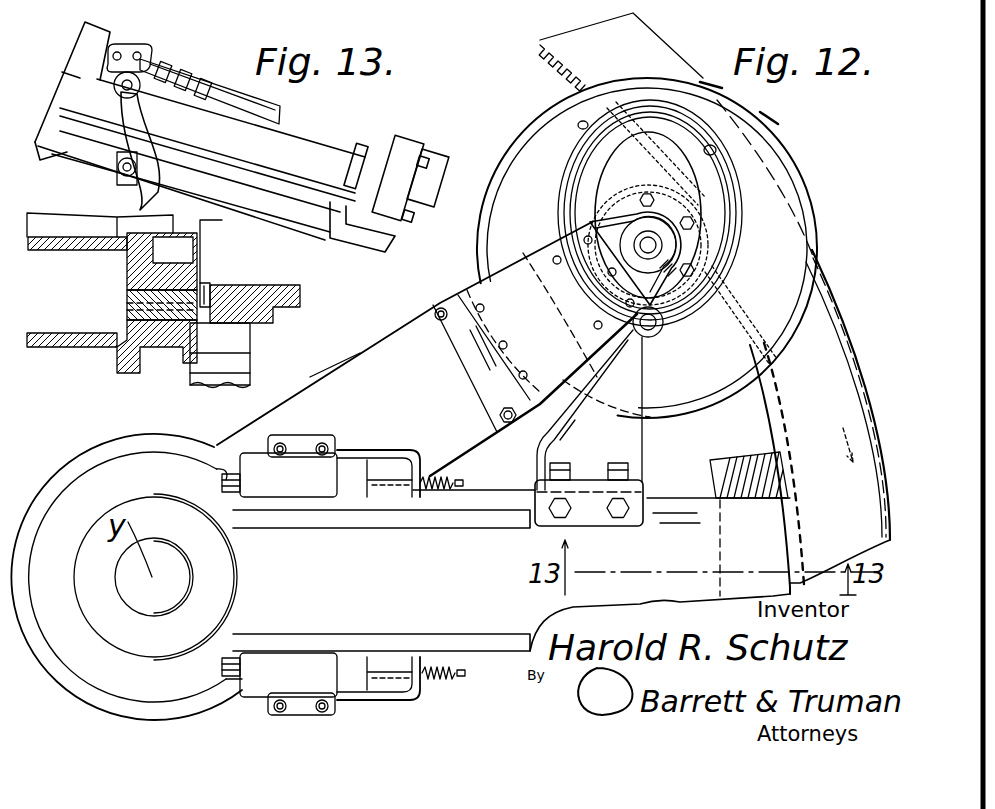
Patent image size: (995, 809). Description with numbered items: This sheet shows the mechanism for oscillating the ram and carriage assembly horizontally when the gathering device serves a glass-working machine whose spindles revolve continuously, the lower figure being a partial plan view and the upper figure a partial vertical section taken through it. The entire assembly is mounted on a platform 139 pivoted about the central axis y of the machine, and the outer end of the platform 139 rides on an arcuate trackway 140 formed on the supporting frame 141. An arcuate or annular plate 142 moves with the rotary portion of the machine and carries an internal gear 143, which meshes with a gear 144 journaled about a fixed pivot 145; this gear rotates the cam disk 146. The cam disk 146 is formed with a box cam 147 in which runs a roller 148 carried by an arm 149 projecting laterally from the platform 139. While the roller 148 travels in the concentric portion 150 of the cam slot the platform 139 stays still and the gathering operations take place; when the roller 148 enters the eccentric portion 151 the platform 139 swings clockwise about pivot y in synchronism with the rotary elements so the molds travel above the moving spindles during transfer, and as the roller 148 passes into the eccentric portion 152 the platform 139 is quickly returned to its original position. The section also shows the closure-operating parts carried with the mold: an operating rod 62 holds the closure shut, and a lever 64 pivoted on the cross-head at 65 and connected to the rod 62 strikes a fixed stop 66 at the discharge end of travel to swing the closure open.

In FIG. 13, the operating rod 62 is at (168, 64).
In FIG. 13, the pivot on the cross-head 65 is at (137, 67).
In FIG. 13, the lever 64 is at (150, 178).
In FIG. 13, the fixed stop 66 is at (122, 176).
In FIG. 13, the platform 139 is at (64, 252).
In FIG. 12, the platform 139 is at (688, 490).
In FIG. 13, the arcuate trackway 140 is at (127, 317).
In FIG. 12, the arcuate trackway 140 is at (712, 461).
In FIG. 13, the supporting frame 141 is at (92, 345).
In FIG. 12, the supporting frame 141 is at (790, 400).
In FIG. 13, the arcuate or annular plate 142 is at (283, 280).
In FIG. 12, the arcuate or annular plate 142 is at (827, 303).
In FIG. 13, the internal gear 143 is at (206, 286).
In FIG. 12, the internal gear 143 is at (585, 68).
In FIG. 12, the gear 144 is at (648, 203).
In FIG. 12, the fixed pivot 145 is at (640, 250).
In FIG. 12, the cam disk 146 is at (803, 190).
In FIG. 12, the box cam 147 is at (562, 163).
In FIG. 12, the roller 148 is at (728, 326).
In FIG. 12, the arm 149 is at (632, 452).
In FIG. 12, the concentric portion of the cam slot 150 is at (720, 330).
In FIG. 12, the eccentric portion of the cam slot 151 is at (714, 151).
In FIG. 12, the eccentric portion of the cam slot 152 is at (578, 125).